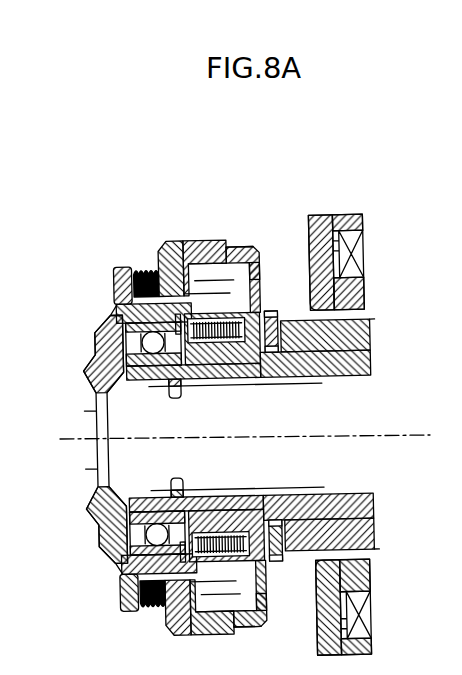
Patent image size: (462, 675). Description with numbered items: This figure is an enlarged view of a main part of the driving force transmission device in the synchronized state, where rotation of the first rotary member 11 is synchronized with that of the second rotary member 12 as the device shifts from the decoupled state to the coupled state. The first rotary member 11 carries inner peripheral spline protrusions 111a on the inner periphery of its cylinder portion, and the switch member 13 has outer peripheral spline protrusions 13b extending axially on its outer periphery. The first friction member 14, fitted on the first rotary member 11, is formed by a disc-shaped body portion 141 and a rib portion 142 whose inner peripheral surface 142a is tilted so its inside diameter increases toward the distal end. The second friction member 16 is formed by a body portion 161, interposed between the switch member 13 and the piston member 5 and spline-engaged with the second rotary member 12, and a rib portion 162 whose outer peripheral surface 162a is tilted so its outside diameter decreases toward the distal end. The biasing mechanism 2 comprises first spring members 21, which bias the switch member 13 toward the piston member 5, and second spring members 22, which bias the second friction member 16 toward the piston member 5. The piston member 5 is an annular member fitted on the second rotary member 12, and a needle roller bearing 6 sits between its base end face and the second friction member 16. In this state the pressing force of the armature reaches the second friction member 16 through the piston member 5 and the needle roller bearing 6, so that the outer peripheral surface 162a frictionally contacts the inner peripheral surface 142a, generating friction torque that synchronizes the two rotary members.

The biasing mechanism 2 is at (292, 386).
The piston member 5 is at (343, 337).
The needle roller bearing 6 is at (275, 330).
The first rotary member 11 is at (93, 360).
The second rotary member 12 is at (357, 367).
The switch member 13 is at (213, 333).
The outer peripheral spline protrusions 13b is at (165, 267).
The first friction member 14 is at (200, 186).
The second friction member 16 is at (373, 184).
The first spring members 21 is at (243, 327).
The second spring members 22 is at (240, 545).
The inner peripheral spline protrusions 111a is at (345, 276).
The body portion 141 is at (176, 270).
The rib portion 142 is at (203, 255).
The inner peripheral surface 142a is at (198, 250).
The body portion 161 is at (310, 277).
The rib portion 162 is at (246, 258).
The outer peripheral surface 162a is at (234, 256).